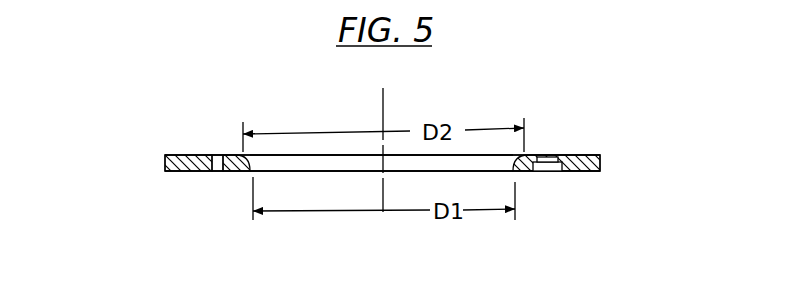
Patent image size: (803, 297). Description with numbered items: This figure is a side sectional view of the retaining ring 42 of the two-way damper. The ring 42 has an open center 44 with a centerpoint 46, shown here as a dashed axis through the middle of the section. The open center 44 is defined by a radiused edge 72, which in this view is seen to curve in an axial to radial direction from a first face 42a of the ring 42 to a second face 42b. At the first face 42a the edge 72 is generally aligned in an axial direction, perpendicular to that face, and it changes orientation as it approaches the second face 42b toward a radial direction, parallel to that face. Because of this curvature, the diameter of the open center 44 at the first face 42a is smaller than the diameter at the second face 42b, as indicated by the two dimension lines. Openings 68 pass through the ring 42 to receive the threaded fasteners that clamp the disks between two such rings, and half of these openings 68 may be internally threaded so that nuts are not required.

The retaining ring 42 is at (592, 155).
The first face 42a is at (185, 172).
The second face 42b is at (186, 154).
The open center 44 is at (325, 162).
The centerpoint 46 is at (384, 113).
The openings 68 is at (217, 154).
The radiused edge 72 is at (252, 154).